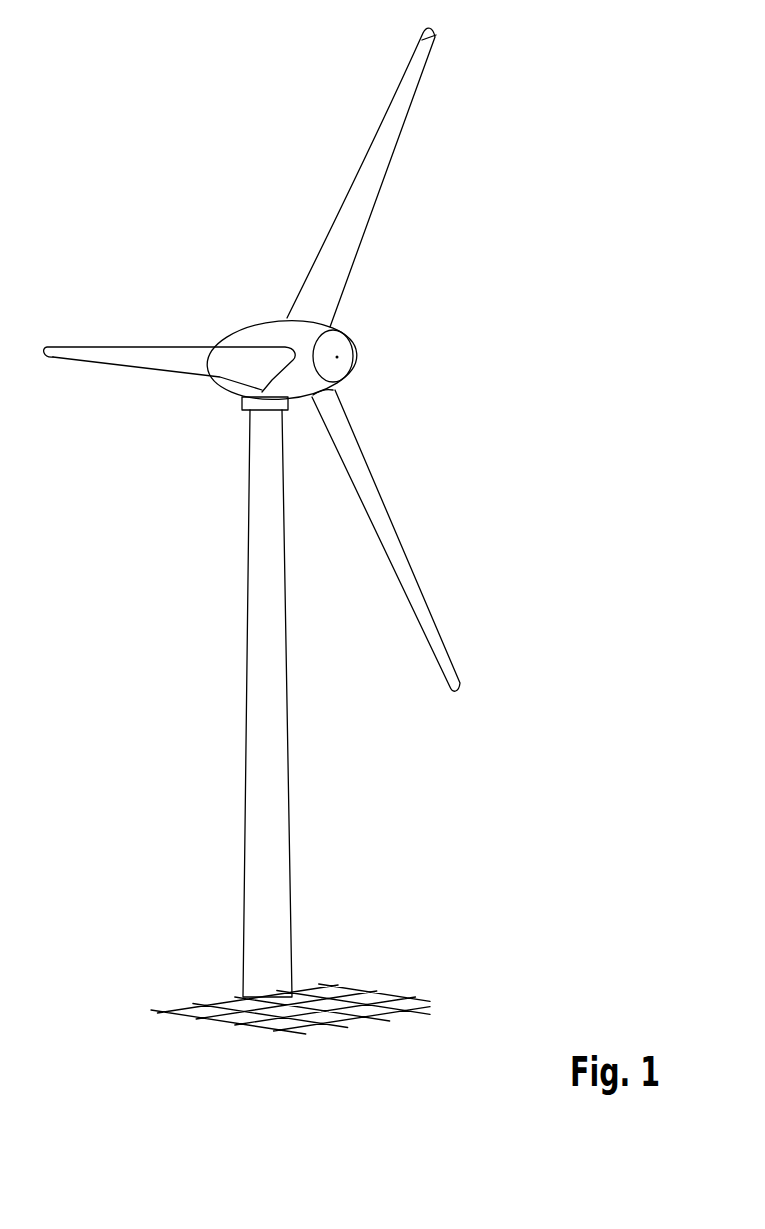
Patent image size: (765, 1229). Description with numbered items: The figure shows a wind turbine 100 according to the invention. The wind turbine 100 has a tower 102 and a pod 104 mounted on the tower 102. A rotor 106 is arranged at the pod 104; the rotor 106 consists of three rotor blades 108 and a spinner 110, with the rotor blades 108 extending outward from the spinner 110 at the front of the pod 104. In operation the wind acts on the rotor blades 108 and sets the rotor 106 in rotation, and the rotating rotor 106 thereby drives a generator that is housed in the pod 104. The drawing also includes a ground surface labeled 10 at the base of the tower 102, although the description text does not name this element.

The wind turbine 100 is at (206, 472).
The tower 102 is at (273, 791).
The pod 104 is at (262, 332).
The rotor 106 is at (415, 282).
The rotor blades 108 is at (390, 138).
The spinner 110 is at (354, 357).
The ground / foundation 10 is at (347, 1000).